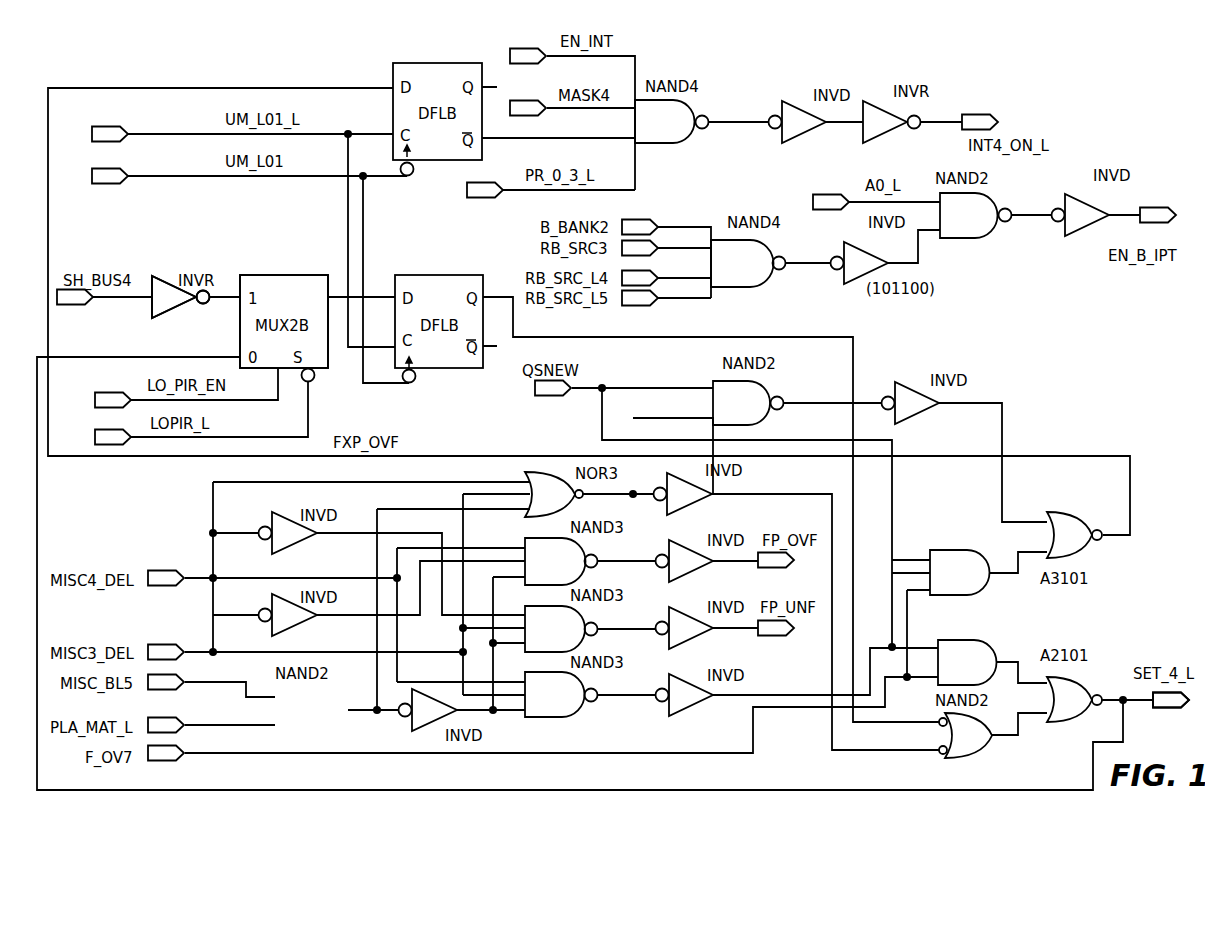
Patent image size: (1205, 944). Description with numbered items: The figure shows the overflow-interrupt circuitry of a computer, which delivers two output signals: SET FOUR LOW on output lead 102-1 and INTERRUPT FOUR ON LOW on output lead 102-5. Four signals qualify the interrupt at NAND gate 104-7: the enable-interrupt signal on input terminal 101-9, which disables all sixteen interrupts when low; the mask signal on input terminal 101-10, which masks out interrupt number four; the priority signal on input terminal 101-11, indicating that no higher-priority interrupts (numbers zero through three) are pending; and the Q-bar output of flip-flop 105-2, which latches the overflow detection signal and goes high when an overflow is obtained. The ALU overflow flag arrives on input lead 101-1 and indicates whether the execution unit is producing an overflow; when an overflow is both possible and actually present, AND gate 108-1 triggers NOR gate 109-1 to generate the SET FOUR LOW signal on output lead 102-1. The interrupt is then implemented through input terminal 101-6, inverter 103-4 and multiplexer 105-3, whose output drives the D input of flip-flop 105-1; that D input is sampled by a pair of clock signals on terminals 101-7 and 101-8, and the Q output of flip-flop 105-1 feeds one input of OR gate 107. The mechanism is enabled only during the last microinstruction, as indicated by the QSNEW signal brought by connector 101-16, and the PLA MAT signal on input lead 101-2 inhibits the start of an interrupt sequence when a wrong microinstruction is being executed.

The input terminal 101-8 is at (127, 128).
The input terminal 101-7 is at (127, 182).
The flip-flop 105-2 is at (393, 66).
The input terminal 101-9 is at (512, 50).
The input terminal 101-10 is at (540, 114).
The input terminal 101-11 is at (485, 198).
The NAND gate 104-7 is at (668, 139).
The output lead 102-5 is at (996, 114).
The multiplexer 105-3 is at (294, 273).
The input terminal 101-6 is at (74, 305).
The inverter 103-4 is at (173, 308).
The flip-flop 105-1 is at (447, 369).
The connector 101-16 is at (553, 396).
The input lead 101-2 is at (186, 721).
The input lead 101-1 is at (186, 758).
The AND gate 108-1 is at (988, 648).
The NOR gate 109-1 is at (1063, 720).
The OR gate 107 is at (970, 750).
The output lead 102-1 is at (1168, 708).